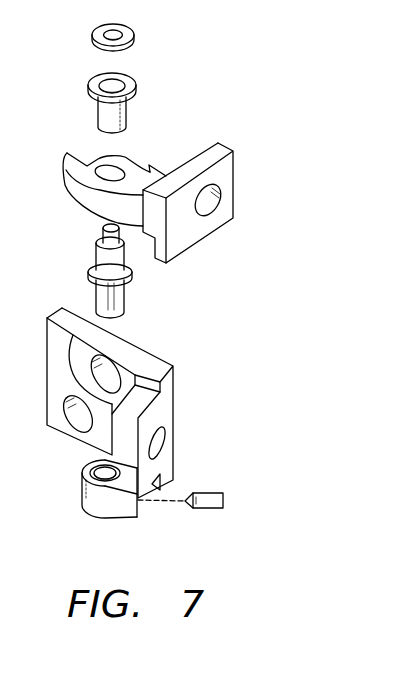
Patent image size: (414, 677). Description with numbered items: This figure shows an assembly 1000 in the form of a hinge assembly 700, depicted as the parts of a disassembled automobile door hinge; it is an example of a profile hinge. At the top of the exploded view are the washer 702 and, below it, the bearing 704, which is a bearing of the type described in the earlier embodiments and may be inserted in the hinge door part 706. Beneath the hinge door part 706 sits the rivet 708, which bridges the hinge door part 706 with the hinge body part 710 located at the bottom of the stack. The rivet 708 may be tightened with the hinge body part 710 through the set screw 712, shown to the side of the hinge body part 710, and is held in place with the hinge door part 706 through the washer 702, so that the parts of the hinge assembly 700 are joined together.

The washer 702 is at (135, 34).
The bearing 704 is at (128, 117).
The hinge door part 706 is at (237, 166).
The rivet 708 is at (125, 300).
The hinge body part 710 is at (176, 398).
The set screw 712 is at (225, 497).
The assembly 1000 is at (310, 102).
The hinge assembly 700 is at (292, 207).